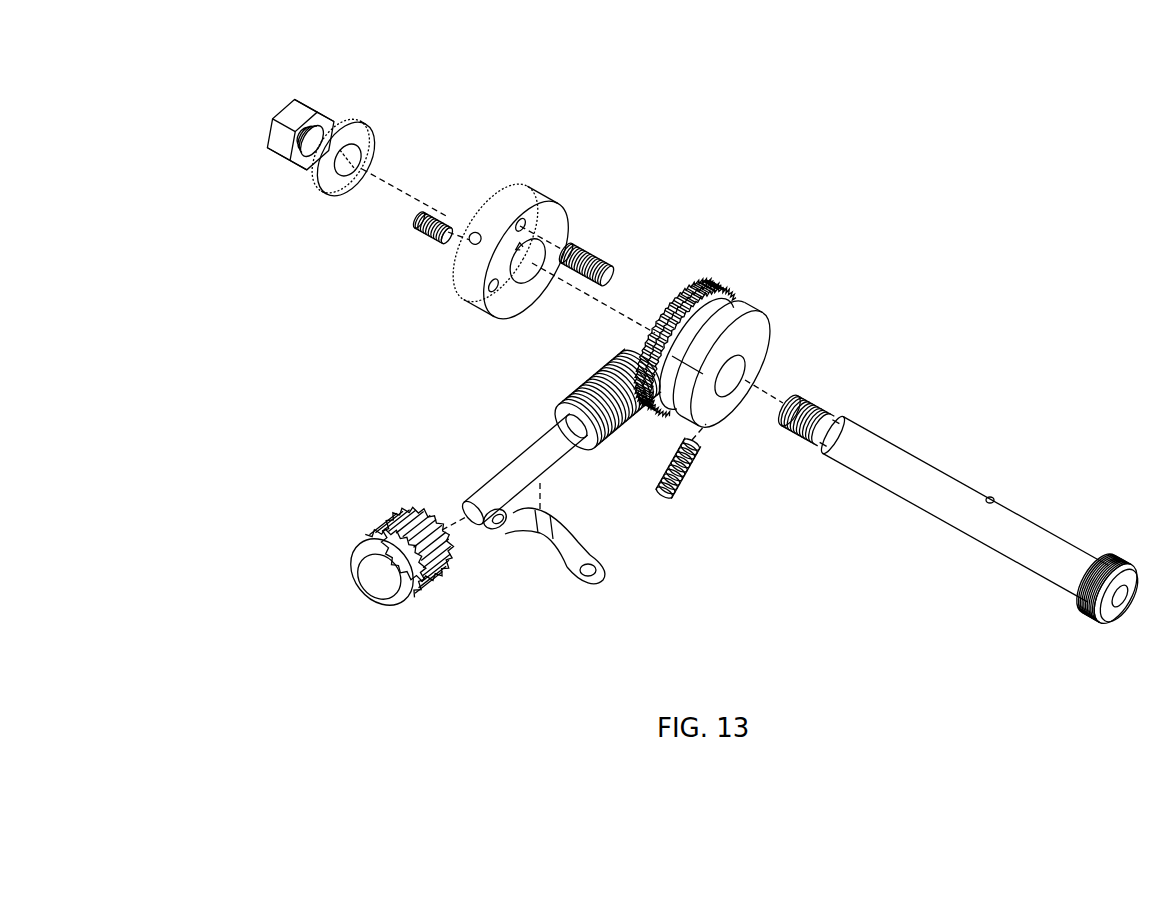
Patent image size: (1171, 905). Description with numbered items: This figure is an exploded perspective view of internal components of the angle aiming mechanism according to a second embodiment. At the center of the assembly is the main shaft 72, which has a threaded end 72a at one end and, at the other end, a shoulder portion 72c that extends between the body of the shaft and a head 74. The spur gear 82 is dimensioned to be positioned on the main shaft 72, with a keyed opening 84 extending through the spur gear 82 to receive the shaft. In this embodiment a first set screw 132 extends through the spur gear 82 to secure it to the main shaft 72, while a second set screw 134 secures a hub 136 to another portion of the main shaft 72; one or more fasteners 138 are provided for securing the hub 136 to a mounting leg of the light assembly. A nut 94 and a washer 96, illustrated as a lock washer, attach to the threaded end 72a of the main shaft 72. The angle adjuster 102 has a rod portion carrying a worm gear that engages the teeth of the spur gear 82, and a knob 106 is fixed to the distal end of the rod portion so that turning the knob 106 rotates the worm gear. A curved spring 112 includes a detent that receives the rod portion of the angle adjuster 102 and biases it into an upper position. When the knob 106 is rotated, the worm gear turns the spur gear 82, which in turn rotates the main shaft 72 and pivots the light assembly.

The nut 94 is at (277, 120).
The washer 96 is at (315, 192).
The hub 136 is at (498, 183).
The fastener 138 is at (595, 255).
The second set screw 134 is at (418, 243).
The spur gear 82 is at (757, 327).
The keyed opening 84 is at (734, 397).
The first set screw 132 is at (682, 490).
The angle adjuster 102 is at (503, 457).
The knob 106 is at (362, 597).
The spring 112 is at (558, 573).
The threaded end 72a is at (813, 397).
The main shaft 72 is at (972, 485).
The shoulder portion 72c is at (1033, 527).
The head 74 is at (1113, 560).